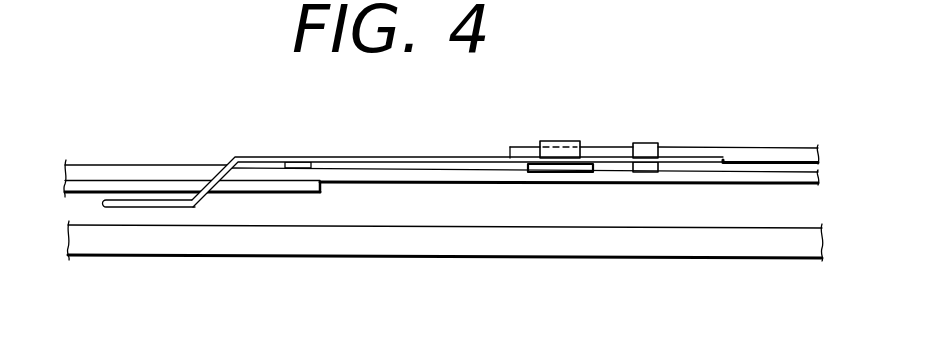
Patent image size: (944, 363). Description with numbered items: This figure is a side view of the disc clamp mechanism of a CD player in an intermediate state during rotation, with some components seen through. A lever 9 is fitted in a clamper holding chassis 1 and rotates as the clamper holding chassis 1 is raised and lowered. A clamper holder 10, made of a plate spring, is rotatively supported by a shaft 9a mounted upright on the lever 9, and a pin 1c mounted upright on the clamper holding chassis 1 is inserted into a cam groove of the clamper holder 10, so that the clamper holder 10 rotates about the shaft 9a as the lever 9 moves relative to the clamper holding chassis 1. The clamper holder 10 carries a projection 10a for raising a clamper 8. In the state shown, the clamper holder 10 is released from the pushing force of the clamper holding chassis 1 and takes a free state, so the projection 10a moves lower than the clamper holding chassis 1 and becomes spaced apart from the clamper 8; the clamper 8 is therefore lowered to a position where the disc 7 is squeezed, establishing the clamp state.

The clamper holding chassis 1 is at (793, 177).
The pin 1c is at (647, 143).
The disc 7 is at (372, 243).
The clamper 8 is at (118, 180).
The lever 9 is at (752, 147).
The shaft 9a is at (563, 140).
The clamper holder 10 is at (445, 155).
The projection 10a is at (137, 208).